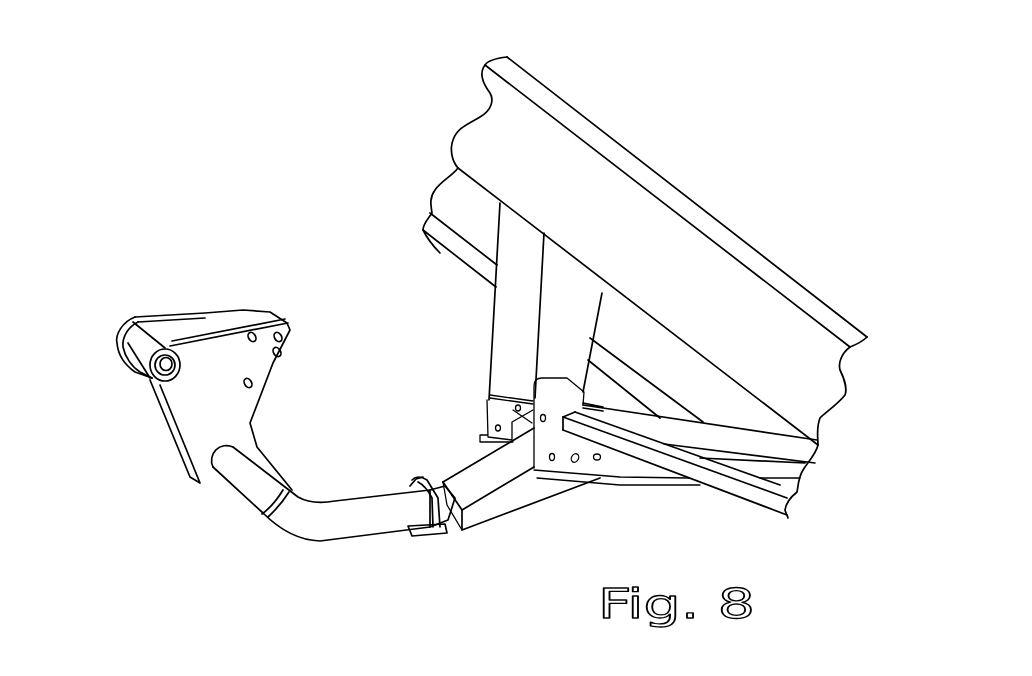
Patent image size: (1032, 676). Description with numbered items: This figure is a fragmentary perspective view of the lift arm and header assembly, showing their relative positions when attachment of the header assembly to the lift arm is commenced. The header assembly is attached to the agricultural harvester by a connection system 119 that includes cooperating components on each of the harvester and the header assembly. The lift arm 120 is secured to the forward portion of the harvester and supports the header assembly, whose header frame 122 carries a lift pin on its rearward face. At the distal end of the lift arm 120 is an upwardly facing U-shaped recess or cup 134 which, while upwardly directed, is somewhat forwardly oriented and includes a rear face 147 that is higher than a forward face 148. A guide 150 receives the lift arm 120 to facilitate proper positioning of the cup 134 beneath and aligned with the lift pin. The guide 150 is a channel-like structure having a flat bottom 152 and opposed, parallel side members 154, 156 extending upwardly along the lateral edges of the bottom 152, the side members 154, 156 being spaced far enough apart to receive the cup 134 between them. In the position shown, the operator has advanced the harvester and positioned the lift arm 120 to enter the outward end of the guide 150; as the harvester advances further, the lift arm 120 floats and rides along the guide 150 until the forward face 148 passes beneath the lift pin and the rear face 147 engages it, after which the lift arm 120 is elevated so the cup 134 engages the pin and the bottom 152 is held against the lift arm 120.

The connection system 119 is at (363, 388).
The lift arm 120 is at (335, 537).
The header frame 122 is at (500, 343).
The cup 134 is at (437, 537).
The rear face 147 is at (410, 483).
The forward face 148 is at (427, 478).
The guide 150 is at (562, 504).
The bottom 152 is at (468, 535).
The side member 154 is at (468, 478).
The side member 156 is at (500, 513).